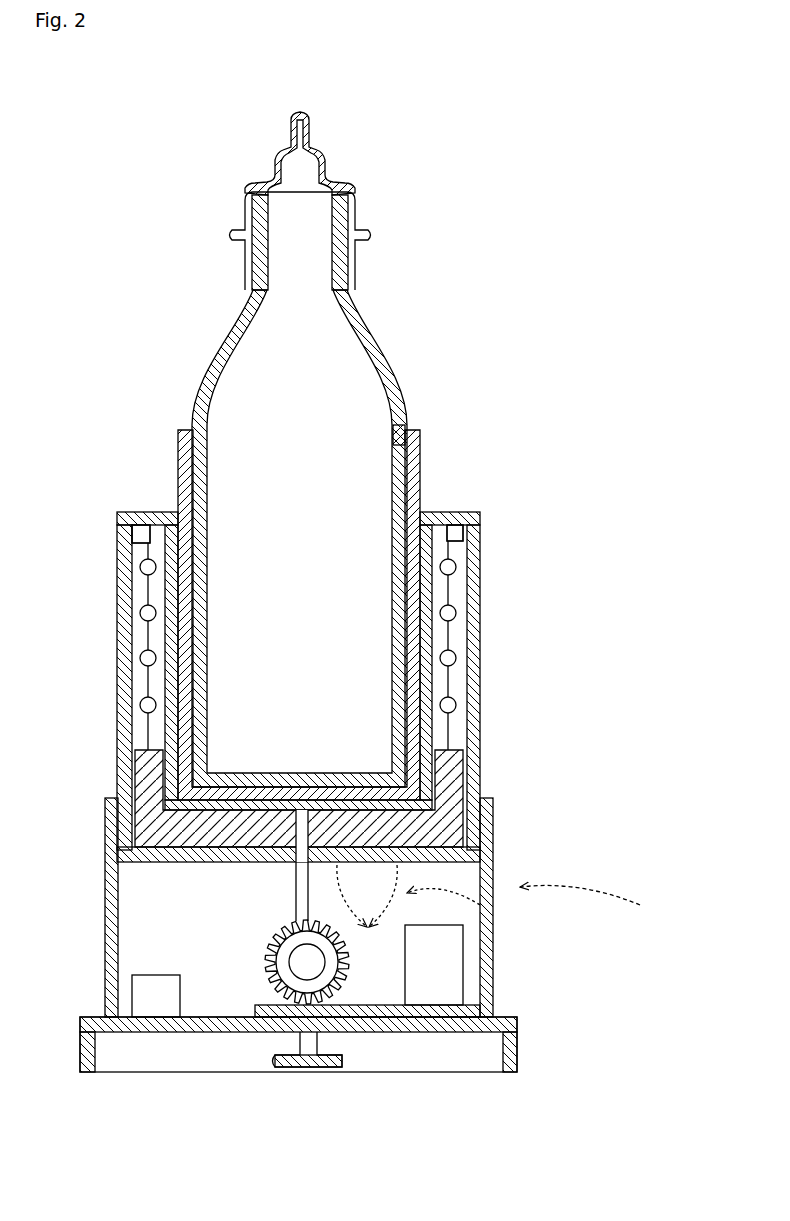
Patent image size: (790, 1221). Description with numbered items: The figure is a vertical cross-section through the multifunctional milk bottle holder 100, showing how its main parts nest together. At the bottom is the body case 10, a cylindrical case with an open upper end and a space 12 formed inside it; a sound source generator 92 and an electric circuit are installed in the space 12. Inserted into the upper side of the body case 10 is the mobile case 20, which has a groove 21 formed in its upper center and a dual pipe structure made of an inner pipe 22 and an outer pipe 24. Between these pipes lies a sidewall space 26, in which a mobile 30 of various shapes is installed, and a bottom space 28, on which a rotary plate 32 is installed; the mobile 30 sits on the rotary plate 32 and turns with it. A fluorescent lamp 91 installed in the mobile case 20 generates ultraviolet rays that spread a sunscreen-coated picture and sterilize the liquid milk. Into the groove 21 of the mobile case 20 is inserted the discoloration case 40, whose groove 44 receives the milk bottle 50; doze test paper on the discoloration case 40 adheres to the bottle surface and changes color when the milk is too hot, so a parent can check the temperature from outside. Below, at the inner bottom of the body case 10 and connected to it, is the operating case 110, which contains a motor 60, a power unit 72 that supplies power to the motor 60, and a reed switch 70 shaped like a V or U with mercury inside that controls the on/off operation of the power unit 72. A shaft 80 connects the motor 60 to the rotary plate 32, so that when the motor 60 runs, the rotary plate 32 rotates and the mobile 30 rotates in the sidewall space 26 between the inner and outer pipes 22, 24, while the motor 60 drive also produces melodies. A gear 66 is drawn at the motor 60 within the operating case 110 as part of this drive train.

The multifunctional milk bottle holder 100 is at (686, 61).
The milk bottle 50 is at (383, 352).
The groove 44 is at (405, 418).
The discoloration case 40 is at (420, 443).
The mobile case 20 is at (314, 663).
The groove 21 is at (178, 515).
The inner pipe 22 is at (447, 512).
The outer pipe 24 is at (480, 592).
The sidewall space 26 is at (480, 686).
The bottom space 28 is at (480, 838).
The mobile 30 is at (456, 612).
The rotary plate 32 is at (465, 781).
The fluorescent lamp 91 is at (117, 520).
The body case 10 is at (110, 933).
The space 12 is at (140, 880).
The sound source generator 92 is at (125, 975).
The motor 60 is at (254, 907).
The gear 66 is at (262, 972).
The shaft 80 is at (290, 878).
The reed switch 70 is at (492, 915).
The power unit 72 is at (443, 977).
The operating case 110 is at (602, 896).